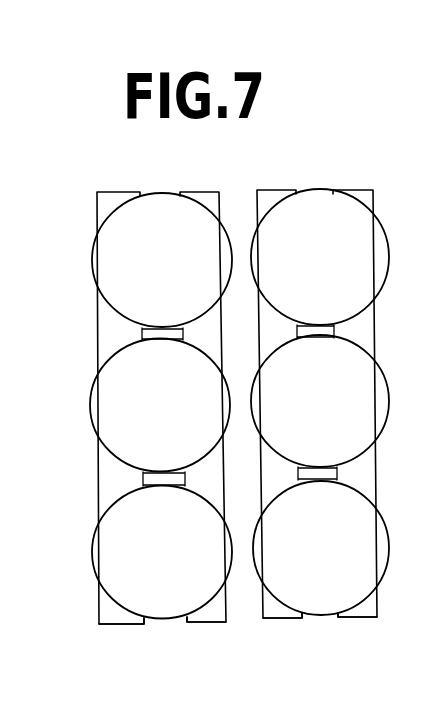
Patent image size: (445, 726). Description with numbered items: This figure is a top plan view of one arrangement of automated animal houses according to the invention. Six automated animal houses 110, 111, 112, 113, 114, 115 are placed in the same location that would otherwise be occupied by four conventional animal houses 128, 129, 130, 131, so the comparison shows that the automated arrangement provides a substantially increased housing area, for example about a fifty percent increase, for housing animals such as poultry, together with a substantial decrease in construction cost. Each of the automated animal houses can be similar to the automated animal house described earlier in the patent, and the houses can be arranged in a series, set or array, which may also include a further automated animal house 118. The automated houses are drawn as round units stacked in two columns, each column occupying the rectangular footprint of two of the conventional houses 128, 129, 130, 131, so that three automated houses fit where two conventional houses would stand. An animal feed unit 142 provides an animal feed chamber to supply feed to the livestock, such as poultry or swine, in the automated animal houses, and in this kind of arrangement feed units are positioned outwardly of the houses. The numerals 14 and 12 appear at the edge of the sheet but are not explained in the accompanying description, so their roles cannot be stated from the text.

The automated animal house 110 is at (155, 192).
The automated animal house 111 is at (317, 190).
The automated animal house 112 is at (97, 380).
The automated animal house 113 is at (368, 375).
The automated animal house 114 is at (95, 548).
The automated animal house 115 is at (388, 548).
The conventional animal house 128 is at (123, 627).
The conventional animal house 129 is at (205, 625).
The conventional animal house 130 is at (285, 620).
The conventional animal house 131 is at (367, 618).
The frame 14 is at (435, 277).
The automated animal house 118 is at (433, 400).
The animal feed unit 142 is at (430, 445).
The housing 12 is at (436, 518).